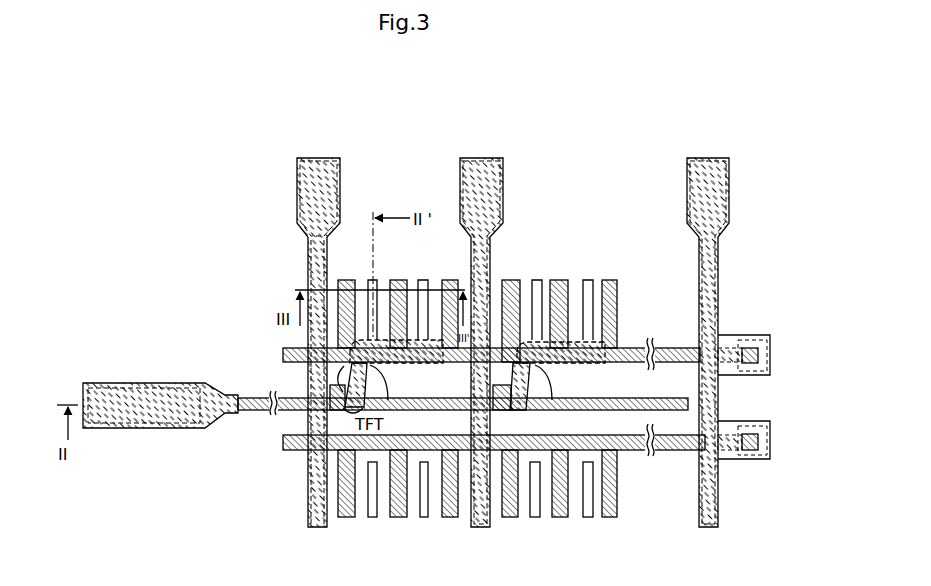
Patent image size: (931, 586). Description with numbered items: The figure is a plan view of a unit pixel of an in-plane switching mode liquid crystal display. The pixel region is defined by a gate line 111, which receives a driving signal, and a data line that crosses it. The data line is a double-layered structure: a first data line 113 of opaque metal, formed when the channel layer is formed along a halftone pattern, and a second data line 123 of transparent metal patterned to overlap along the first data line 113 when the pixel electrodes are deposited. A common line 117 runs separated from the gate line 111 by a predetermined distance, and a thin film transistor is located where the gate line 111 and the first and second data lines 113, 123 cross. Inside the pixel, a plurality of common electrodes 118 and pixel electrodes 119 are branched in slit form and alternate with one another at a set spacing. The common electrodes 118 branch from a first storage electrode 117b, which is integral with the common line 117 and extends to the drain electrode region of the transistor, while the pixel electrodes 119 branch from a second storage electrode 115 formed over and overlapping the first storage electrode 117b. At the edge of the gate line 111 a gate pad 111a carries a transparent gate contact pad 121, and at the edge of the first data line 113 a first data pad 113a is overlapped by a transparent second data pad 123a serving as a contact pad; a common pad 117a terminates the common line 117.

The gate line 111 is at (255, 412).
The gate pad 111a is at (103, 428).
The first data line 113 is at (307, 256).
The first data pad 113a is at (340, 196).
The second storage electrode 115 is at (378, 368).
The common line 117 is at (672, 348).
The common pad 117a is at (771, 352).
The first storage electrode 117b is at (430, 367).
The common electrode 118 is at (346, 280).
The pixel electrode 119 is at (423, 280).
The gate contact pad 121 is at (157, 428).
The second data line 123 is at (308, 495).
The second data pad 123a is at (320, 158).